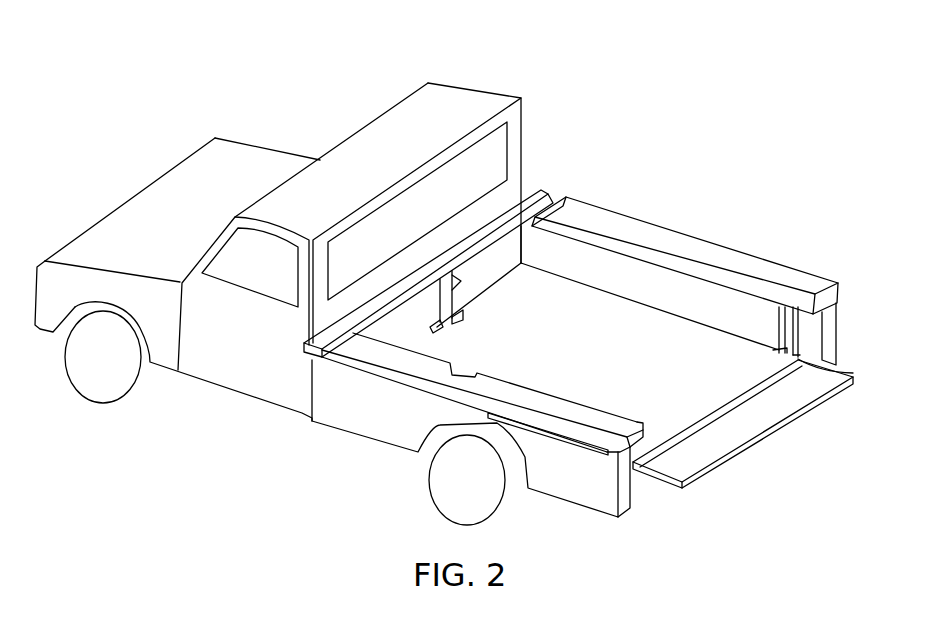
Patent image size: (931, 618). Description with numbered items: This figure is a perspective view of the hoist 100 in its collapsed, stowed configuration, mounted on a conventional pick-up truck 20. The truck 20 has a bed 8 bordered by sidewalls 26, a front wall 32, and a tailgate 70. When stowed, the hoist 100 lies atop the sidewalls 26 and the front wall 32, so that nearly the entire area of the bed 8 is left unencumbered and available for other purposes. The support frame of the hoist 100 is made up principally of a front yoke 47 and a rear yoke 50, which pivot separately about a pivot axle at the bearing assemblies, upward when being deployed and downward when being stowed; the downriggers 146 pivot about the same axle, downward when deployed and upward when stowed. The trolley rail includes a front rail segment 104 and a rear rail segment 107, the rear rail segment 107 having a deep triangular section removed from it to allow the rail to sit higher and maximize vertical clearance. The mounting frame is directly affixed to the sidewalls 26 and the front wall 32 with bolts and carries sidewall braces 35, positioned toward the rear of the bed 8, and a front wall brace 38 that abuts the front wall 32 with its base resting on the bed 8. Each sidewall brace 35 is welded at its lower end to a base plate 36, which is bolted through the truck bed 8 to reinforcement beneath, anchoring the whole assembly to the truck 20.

The pick-up truck 20 is at (290, 97).
The hoist 100 is at (595, 300).
The rear yoke 50 is at (533, 193).
The front rail segment 104 is at (657, 242).
The sidewalls 26 is at (599, 352).
The front wall 32 is at (505, 279).
The front wall brace 38 is at (454, 317).
The front yoke 47 is at (350, 333).
The bed 8 is at (700, 382).
The rear rail segment 107 is at (380, 357).
The downriggers 146 is at (513, 422).
The sidewall braces 35 is at (796, 327).
The base plate 36 is at (837, 366).
The tailgate 70 is at (727, 440).